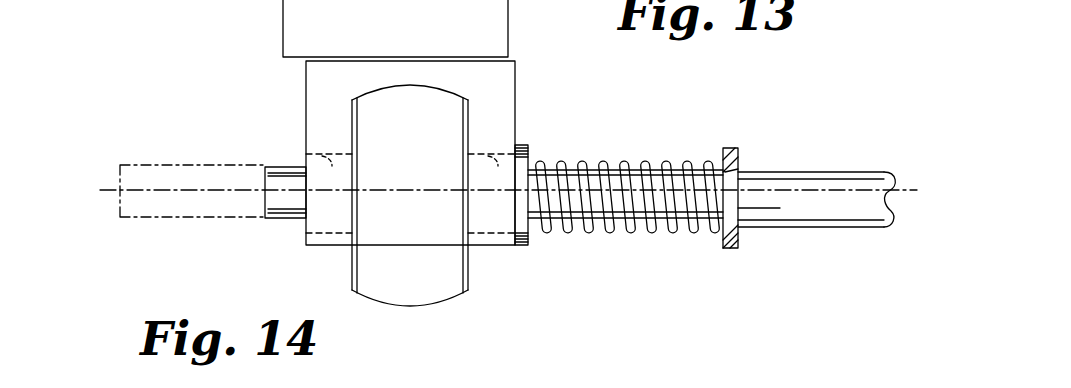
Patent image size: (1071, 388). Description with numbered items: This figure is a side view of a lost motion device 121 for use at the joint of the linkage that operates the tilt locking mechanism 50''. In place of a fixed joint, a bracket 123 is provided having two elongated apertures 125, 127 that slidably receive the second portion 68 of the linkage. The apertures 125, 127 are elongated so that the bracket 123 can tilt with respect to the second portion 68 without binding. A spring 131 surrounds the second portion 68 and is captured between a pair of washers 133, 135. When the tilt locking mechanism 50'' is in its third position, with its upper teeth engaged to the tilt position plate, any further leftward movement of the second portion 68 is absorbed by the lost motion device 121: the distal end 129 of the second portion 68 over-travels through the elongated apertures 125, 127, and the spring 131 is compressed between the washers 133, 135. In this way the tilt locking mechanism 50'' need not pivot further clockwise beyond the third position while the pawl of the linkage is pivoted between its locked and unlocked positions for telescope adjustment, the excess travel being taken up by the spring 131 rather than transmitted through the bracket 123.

The tilt locking mechanism 50'' is at (347, 28).
The lost motion device 121 is at (158, 98).
The bracket 123 is at (325, 100).
The elongated aperture 125 is at (305, 163).
The elongated aperture 127 is at (530, 158).
The distal end of the second portion 129 is at (150, 205).
The spring 131 is at (640, 238).
The washer 133 is at (530, 243).
The washer 135 is at (732, 148).
The second portion of the linkage 68 is at (773, 232).